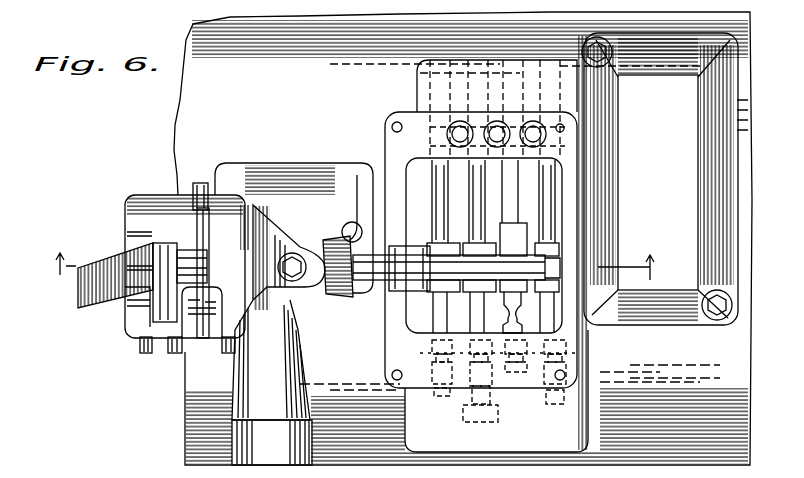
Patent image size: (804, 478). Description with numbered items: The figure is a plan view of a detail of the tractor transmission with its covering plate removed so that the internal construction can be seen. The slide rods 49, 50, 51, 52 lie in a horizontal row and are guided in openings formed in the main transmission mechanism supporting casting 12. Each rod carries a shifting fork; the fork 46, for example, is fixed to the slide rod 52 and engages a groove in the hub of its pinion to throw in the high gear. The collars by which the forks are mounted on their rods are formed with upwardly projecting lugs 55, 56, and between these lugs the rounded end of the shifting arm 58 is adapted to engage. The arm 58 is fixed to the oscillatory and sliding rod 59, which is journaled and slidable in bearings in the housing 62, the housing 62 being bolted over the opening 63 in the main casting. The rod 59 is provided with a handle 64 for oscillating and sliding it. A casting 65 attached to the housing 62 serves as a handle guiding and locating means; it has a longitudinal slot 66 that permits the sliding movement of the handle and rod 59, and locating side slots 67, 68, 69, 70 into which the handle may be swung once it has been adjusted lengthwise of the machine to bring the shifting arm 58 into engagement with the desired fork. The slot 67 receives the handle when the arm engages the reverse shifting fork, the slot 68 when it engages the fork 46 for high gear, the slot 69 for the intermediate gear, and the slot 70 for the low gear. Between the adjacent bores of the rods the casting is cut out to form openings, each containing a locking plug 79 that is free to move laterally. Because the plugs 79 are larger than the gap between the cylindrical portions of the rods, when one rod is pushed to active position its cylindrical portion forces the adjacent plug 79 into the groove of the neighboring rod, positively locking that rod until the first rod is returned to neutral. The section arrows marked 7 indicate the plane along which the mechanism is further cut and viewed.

The casting 12 is at (182, 100).
The fork 46 is at (490, 418).
The slide rod 49 is at (517, 178).
The slide rod 50 is at (548, 213).
The slide rod 51 is at (437, 183).
The slide rod 52 is at (473, 183).
The lug 55 is at (488, 287).
The lug 56 is at (525, 240).
The shifting arm 58 is at (388, 290).
The oscillatory and sliding rod 59 is at (216, 235).
The housing 62 is at (325, 245).
The opening 63 is at (407, 327).
The handle 64 is at (110, 262).
The casting 65 is at (127, 200).
The longitudinal slot 66 is at (183, 240).
The side slot 67 is at (147, 297).
The side slot 68 is at (178, 328).
The side slot 69 is at (200, 180).
The side slot 70 is at (230, 328).
The locking plug 79 is at (540, 134).
The section line 7 is at (350, 267).